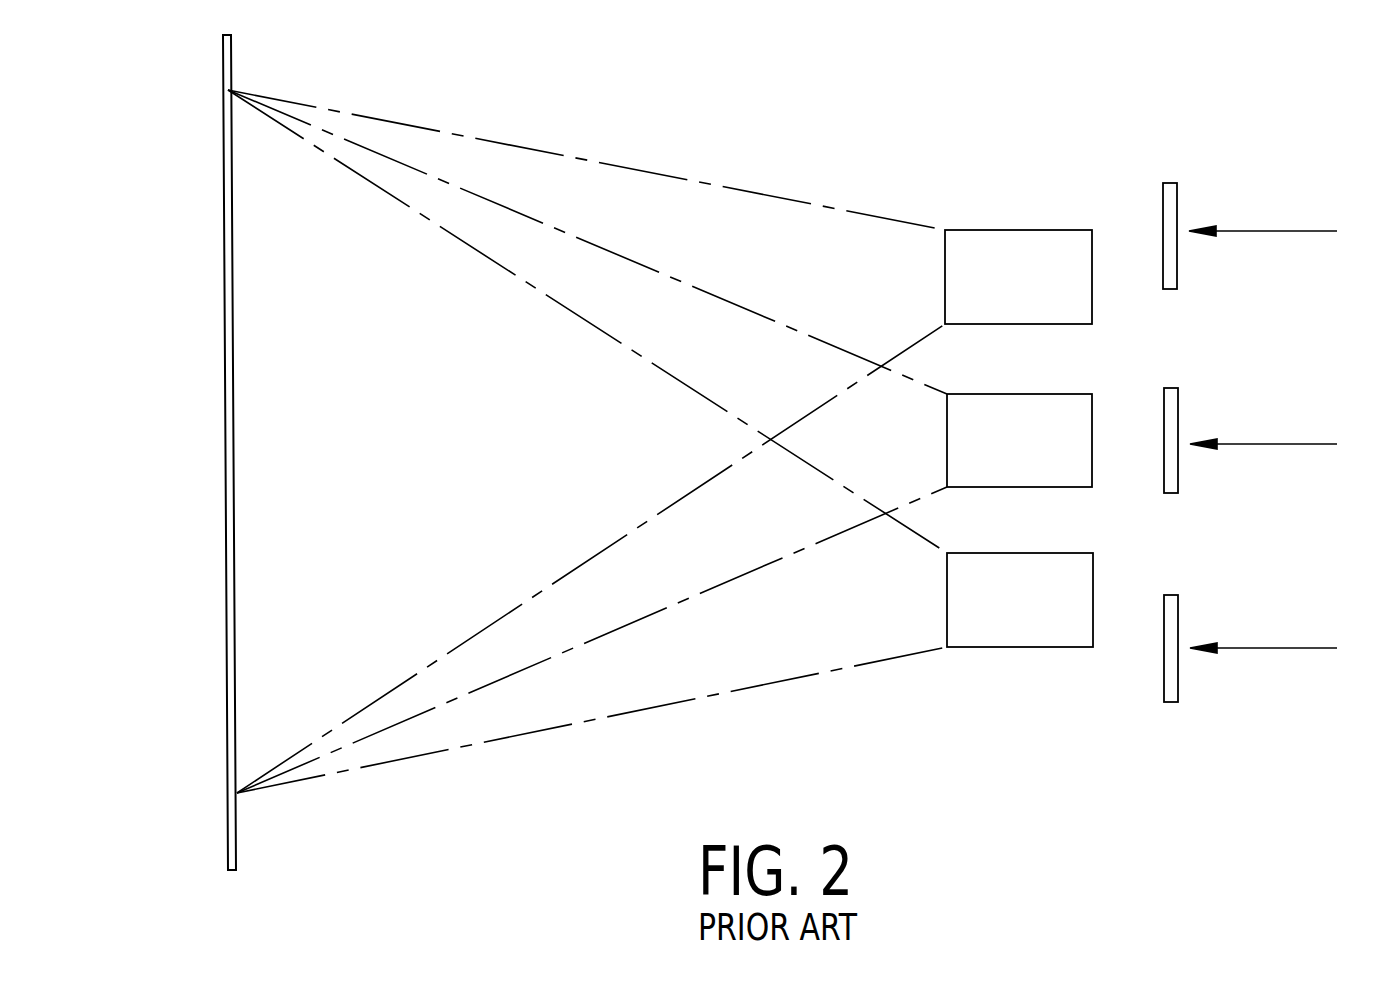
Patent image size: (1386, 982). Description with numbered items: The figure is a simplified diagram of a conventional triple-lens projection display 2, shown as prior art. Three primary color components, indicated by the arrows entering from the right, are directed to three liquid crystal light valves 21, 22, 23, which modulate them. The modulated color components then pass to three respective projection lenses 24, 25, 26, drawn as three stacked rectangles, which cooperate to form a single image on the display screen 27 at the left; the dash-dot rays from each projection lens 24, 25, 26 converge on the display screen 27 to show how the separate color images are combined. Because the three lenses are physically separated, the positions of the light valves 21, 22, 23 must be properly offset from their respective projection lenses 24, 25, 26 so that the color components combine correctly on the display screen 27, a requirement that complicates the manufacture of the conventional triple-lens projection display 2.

The conventional triple-lens projection display 2 is at (1276, 180).
The liquid crystal light valve 21 is at (1172, 262).
The liquid crystal light valve 22 is at (1175, 474).
The liquid crystal light valve 23 is at (1172, 686).
The projection lens 24 is at (1025, 251).
The projection lens 25 is at (1055, 473).
The projection lens 26 is at (1020, 617).
The display screen 27 is at (227, 497).